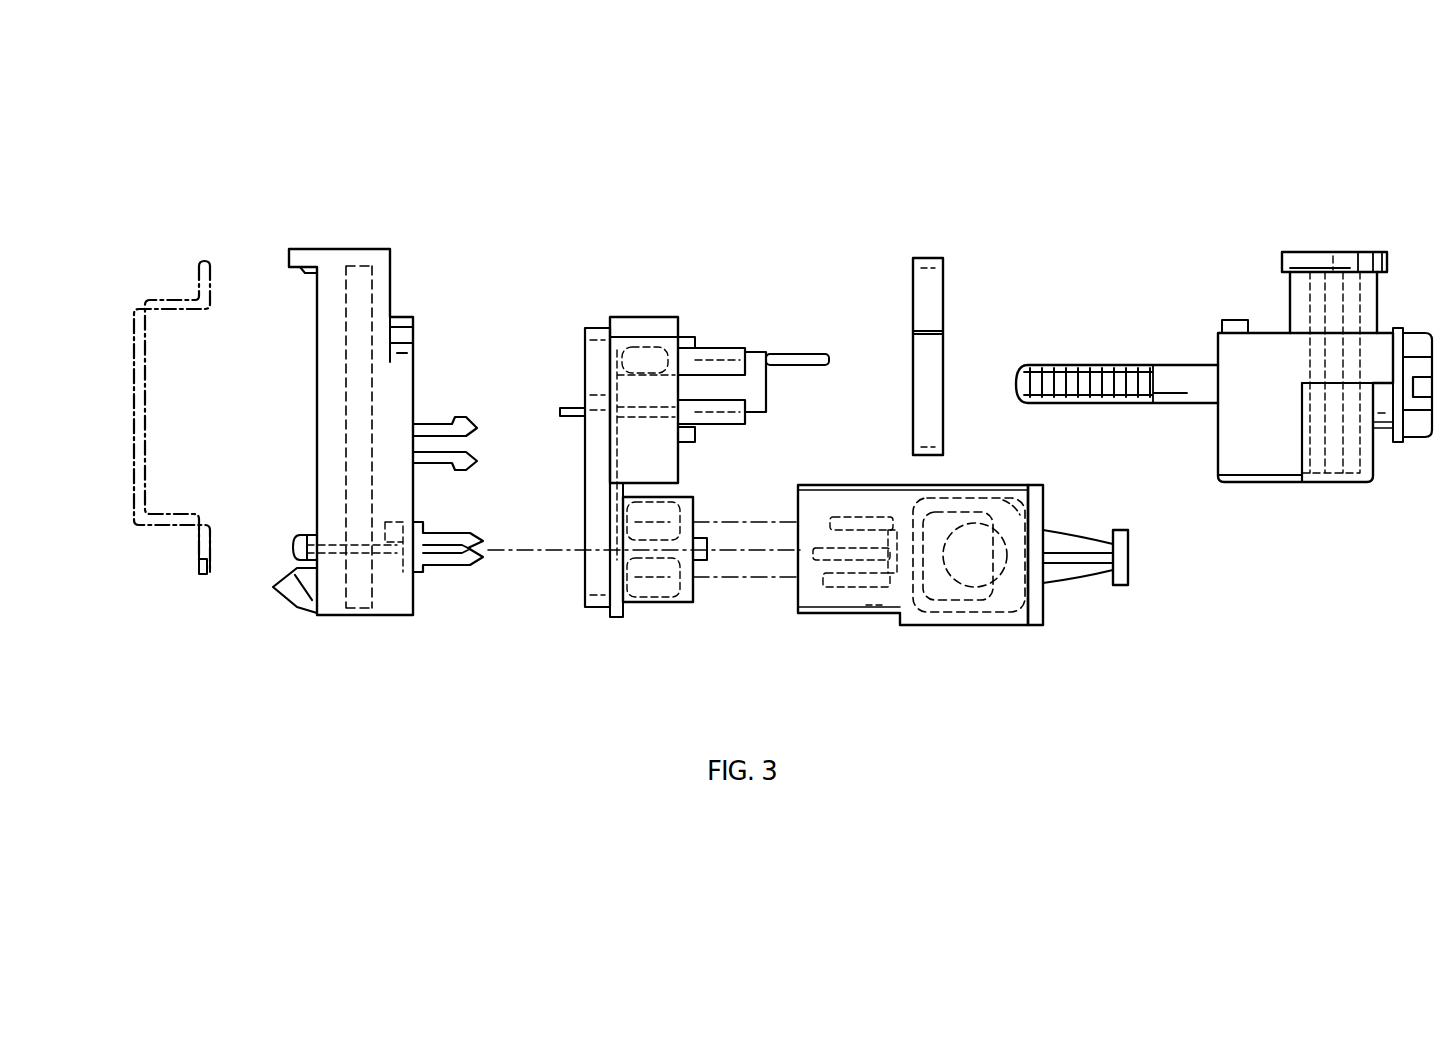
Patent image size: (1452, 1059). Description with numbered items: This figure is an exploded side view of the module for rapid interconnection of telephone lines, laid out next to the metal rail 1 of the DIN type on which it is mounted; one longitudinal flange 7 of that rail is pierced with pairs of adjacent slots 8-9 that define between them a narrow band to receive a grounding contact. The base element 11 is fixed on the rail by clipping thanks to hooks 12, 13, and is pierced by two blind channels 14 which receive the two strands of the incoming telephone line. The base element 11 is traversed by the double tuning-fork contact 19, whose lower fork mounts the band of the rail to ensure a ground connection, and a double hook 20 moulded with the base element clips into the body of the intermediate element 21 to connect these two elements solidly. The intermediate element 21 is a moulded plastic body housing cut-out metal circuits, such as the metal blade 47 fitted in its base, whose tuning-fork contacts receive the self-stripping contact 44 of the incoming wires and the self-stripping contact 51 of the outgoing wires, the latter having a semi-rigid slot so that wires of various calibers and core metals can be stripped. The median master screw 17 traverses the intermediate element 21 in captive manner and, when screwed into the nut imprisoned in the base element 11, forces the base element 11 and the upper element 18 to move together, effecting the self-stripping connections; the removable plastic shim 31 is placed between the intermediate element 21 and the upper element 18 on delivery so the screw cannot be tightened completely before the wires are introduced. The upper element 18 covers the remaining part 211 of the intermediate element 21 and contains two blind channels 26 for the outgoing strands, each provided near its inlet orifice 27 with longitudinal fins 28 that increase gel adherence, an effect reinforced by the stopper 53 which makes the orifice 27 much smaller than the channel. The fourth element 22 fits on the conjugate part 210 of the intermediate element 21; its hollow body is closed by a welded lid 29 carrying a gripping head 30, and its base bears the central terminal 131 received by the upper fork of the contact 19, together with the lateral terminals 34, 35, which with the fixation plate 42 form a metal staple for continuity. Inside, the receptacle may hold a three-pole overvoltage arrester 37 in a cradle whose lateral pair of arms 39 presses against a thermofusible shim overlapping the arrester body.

The metal rail 1 is at (181, 298).
The longitudinal flange 7 is at (200, 578).
The adjacent slots 8-9 is at (190, 560).
The base element 11 is at (389, 284).
The hook 12 is at (307, 266).
The hook 13 is at (298, 570).
The blind channels 14 is at (362, 406).
The double tuning-fork contact 19 is at (422, 585).
The double hook 20 is at (440, 418).
The intermediate element 21 is at (635, 323).
The cut-out metal blade 47 is at (596, 461).
The conjugate part 210 is at (685, 604).
The remaining part 211 is at (689, 370).
The self-stripping contact 44 is at (727, 435).
The self-stripping contact 51 is at (790, 351).
The plastic shim 31 is at (920, 282).
The fourth element 22 is at (1003, 508).
The fixation plate 42 is at (1020, 500).
The welded lid 29 is at (1035, 625).
The head 30 is at (1128, 565).
The lateral terminal 34 is at (853, 518).
The central terminal 131 is at (880, 612).
The lateral terminal 35 is at (838, 588).
The three-pole overvoltage arrester 37 is at (968, 572).
The lateral pair of arms 39 is at (978, 495).
The median master screw 17 is at (1052, 368).
The upper element 18 is at (1228, 352).
The blind channels 26 is at (1336, 463).
The longitudinal fins 28 is at (1378, 296).
The stopper 53 is at (1288, 262).
The orifice 27 is at (1332, 252).